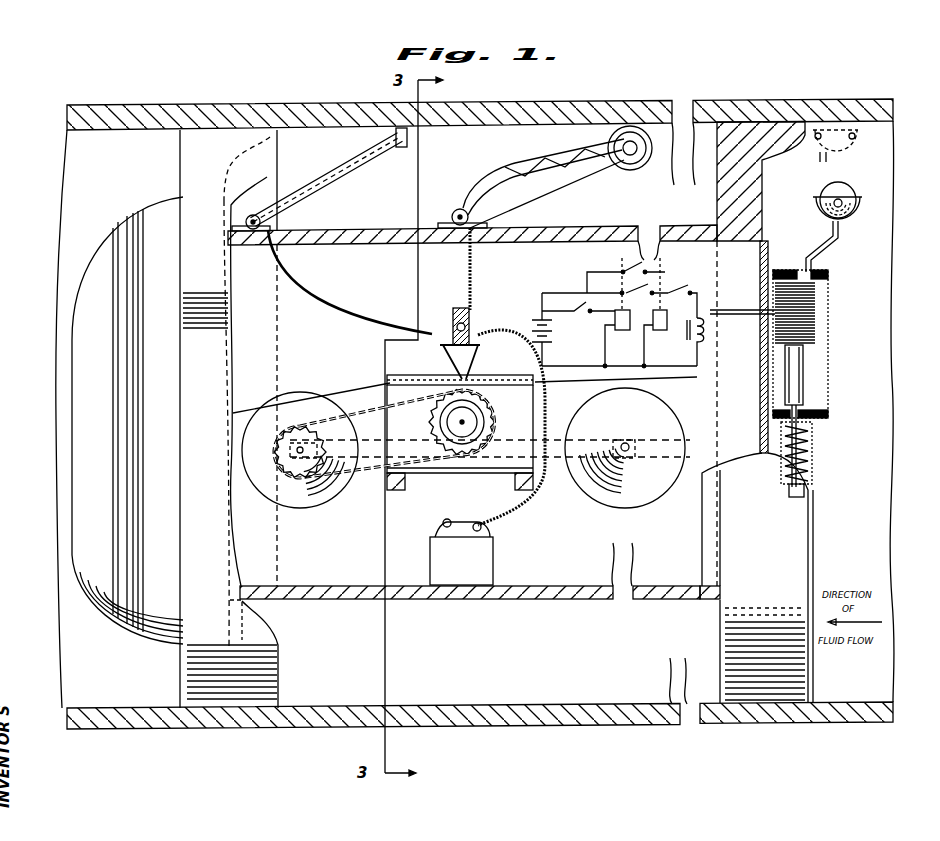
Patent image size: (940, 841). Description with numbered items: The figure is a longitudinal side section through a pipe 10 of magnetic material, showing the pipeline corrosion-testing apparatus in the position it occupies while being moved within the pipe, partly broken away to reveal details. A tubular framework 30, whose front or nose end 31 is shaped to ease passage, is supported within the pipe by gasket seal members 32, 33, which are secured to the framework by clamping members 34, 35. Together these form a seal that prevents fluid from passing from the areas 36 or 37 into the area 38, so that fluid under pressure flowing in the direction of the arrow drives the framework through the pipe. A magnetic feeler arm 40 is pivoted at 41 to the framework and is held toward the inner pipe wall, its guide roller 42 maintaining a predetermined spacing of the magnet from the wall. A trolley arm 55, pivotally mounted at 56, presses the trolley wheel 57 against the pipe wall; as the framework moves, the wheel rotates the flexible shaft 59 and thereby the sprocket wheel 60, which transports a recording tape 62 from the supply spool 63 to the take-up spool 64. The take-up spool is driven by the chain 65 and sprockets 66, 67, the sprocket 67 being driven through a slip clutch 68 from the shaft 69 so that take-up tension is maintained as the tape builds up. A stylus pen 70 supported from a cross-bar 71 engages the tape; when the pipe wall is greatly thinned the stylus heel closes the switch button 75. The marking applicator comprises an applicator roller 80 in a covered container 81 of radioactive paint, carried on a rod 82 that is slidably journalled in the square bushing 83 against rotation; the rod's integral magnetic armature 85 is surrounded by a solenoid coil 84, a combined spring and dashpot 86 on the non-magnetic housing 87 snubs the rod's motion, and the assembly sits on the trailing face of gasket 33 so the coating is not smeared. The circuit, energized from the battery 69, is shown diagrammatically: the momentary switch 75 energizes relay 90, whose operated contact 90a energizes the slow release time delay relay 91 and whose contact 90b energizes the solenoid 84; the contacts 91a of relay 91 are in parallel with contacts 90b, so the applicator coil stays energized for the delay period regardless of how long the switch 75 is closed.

The pipe 10 is at (567, 93).
The framework 30 is at (550, 587).
The nose end 31 is at (137, 630).
The gasket seal member 32 is at (270, 672).
The gasket seal member 33 is at (793, 553).
The clamping member 34 is at (232, 205).
The clamping member 35 is at (766, 200).
The area 36 is at (867, 486).
The area 37 is at (88, 183).
The area 38 is at (533, 693).
The feeler arm 40 is at (340, 176).
The pivot 41 is at (260, 238).
The guide roller 42 is at (361, 106).
The trolley arm 55 is at (556, 184).
The pivot 56 is at (457, 213).
The trolley wheel 57 is at (640, 171).
The flexible shaft 59 is at (467, 262).
The sprocket wheel 60 is at (490, 428).
The recording tape 62 is at (591, 389).
The supply spool 63 is at (613, 503).
The take-up spool 64 is at (313, 378).
The chain 65 is at (352, 393).
The sprocket 66 is at (298, 470).
The sprocket 67 is at (441, 423).
The slip clutch 68 is at (463, 432).
The shaft / battery 69 is at (479, 558).
The stylus pen 70 is at (462, 367).
The cross-bar 71 is at (460, 318).
The switch button 75 is at (582, 313).
The applicator roller 80 is at (850, 124).
The covered container 81 is at (853, 214).
The rod 82 is at (826, 247).
The solenoid 83 is at (790, 268).
The solenoid coil 84 is at (703, 334).
The armature 85 is at (803, 373).
The combined spring and dashpot 86 is at (813, 448).
The housing 87 is at (828, 398).
The relay 90 is at (619, 313).
The operated contact 90a is at (658, 284).
The operated contact 90b is at (657, 268).
The slow release time delay relay 91 is at (658, 312).
The operated contacts 91a is at (699, 292).